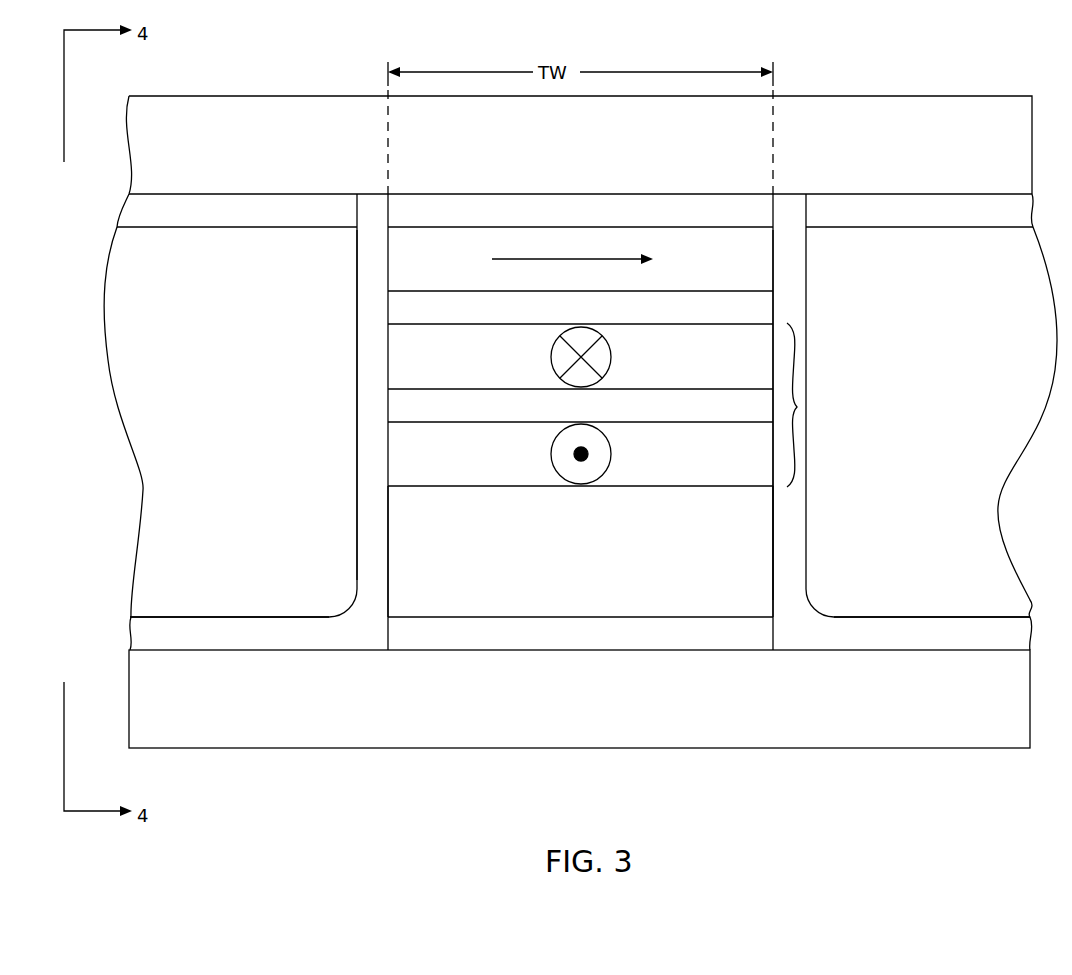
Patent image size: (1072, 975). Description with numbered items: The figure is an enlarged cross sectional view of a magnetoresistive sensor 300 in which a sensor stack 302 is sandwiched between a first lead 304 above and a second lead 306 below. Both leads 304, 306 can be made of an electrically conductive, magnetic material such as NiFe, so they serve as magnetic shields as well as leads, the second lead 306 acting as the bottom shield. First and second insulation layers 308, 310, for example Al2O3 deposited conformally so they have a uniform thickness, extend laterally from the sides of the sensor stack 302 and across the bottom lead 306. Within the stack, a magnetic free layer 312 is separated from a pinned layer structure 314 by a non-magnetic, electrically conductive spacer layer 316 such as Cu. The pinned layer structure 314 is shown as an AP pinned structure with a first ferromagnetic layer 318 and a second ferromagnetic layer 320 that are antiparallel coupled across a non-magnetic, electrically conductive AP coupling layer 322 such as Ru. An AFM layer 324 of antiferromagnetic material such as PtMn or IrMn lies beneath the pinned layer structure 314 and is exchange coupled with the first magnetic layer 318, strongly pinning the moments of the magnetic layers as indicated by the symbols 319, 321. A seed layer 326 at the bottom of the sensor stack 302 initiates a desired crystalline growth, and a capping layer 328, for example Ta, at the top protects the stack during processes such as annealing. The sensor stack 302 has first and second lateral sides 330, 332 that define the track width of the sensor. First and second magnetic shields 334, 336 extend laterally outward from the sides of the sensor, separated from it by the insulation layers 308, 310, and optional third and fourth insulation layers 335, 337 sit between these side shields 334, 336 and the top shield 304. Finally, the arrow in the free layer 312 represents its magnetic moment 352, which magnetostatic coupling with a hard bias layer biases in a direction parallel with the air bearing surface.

The magnetoresistive sensor 300 is at (972, 76).
The sensor stack 302 is at (385, 297).
The first lead 304 is at (490, 147).
The second lead 306 is at (640, 697).
The first insulation layer 308 is at (818, 631).
The second insulation layer 310 is at (315, 632).
The magnetic free layer 312 is at (675, 261).
The pinned layer structure 314 is at (797, 362).
The spacer layer 316 is at (490, 307).
The first ferromagnetic layer 318 is at (645, 456).
The magnetic moment symbol 319 is at (551, 454).
The second ferromagnetic layer 320 is at (645, 358).
The magnetic moment symbol 321 is at (551, 357).
The AP coupling layer 322 is at (613, 406).
The AFM layer 324 is at (637, 550).
The seed layer 326 is at (645, 631).
The capping layer 328 is at (490, 212).
The first lateral side 330 is at (778, 282).
The second lateral side 332 is at (388, 371).
The first magnetic shield 334 is at (873, 388).
The third insulation layer 335 is at (877, 210).
The second magnetic shield 336 is at (258, 423).
The fourth insulation layer 337 is at (256, 210).
The magnetic moment 352 is at (508, 253).